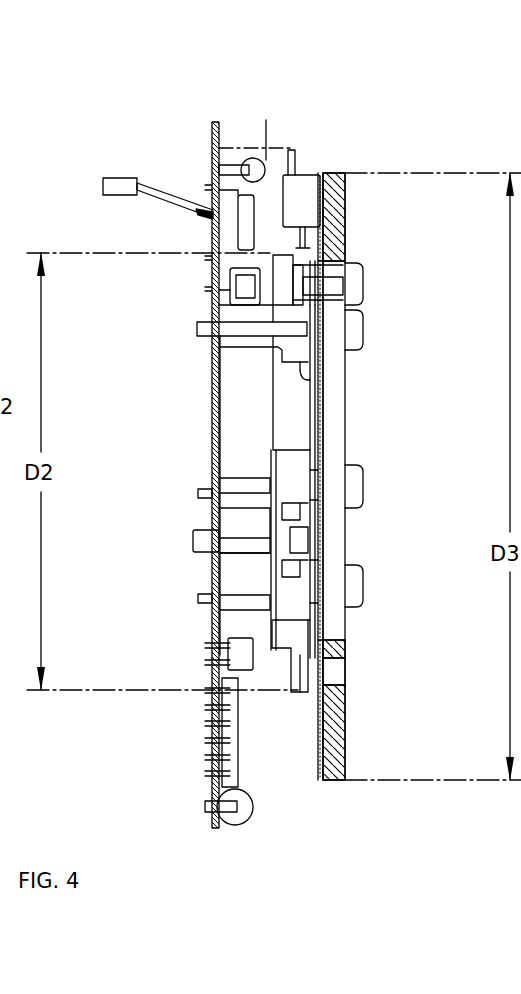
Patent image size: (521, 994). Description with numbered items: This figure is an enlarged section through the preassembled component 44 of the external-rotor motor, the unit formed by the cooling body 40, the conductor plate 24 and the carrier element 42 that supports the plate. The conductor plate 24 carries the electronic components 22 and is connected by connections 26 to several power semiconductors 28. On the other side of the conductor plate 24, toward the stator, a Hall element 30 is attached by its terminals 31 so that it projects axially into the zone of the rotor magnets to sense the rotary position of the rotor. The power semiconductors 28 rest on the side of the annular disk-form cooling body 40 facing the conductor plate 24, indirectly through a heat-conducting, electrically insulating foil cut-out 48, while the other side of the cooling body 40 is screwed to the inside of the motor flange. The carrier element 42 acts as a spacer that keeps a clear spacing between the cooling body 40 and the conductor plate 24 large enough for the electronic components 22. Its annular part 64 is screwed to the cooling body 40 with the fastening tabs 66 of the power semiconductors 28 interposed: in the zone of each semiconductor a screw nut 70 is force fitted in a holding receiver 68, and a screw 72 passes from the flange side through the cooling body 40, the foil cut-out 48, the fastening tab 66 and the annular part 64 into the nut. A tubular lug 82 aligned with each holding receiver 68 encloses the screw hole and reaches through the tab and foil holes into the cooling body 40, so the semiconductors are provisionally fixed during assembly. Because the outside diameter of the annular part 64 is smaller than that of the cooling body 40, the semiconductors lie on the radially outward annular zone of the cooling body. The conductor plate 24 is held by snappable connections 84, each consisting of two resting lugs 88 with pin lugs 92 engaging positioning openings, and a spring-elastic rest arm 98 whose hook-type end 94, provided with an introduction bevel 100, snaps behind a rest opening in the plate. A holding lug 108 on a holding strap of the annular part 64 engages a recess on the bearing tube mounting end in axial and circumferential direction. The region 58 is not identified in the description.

The electronic components 22 is at (256, 215).
The conductor plate 24 is at (212, 138).
The connections 26 is at (250, 148).
The power semiconductors 28 is at (292, 183).
The Hall element 30 is at (120, 187).
The terminals 31 is at (165, 203).
The cooling body 40 is at (335, 748).
The carrier element 42 is at (288, 652).
The preassembled component 44 is at (98, 748).
The foil cut-out 48 is at (326, 180).
The opening 58 is at (340, 677).
The annular part 64 is at (287, 428).
The fastening tabs 66 is at (302, 240).
The holding receiver 68 is at (224, 275).
The screw nut 70 is at (250, 314).
The screw 72 is at (366, 325).
The tubular lug 82 is at (326, 262).
The snappable connection 84 is at (198, 533).
The resting lugs 88 is at (237, 480).
The pin lug 92 is at (205, 492).
The hook-type end 94 is at (196, 544).
The rest arm 98 is at (240, 556).
The introduction bevel 100 is at (222, 525).
The holding lug 108 is at (305, 372).